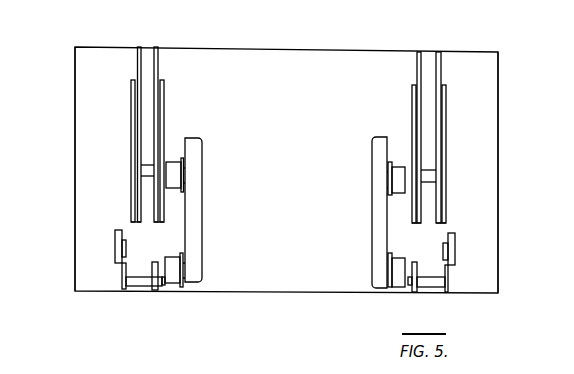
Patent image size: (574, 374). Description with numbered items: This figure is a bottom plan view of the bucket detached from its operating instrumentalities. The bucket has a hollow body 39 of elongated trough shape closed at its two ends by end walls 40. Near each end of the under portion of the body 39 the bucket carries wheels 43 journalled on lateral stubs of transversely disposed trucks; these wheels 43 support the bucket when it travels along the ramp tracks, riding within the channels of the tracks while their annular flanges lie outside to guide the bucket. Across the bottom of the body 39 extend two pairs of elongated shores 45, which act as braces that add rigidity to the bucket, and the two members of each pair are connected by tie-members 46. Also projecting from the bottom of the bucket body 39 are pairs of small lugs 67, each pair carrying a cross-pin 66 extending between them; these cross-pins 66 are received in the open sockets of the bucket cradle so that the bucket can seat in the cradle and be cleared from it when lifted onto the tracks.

The hollow body of the bucket 39 is at (275, 47).
The end walls 40 is at (73, 150).
The wheels 43 is at (177, 163).
The elongated shores 45 is at (137, 60).
The tie-members 46 is at (150, 178).
The cross-pins 66 is at (142, 282).
The small lugs 67 is at (123, 290).